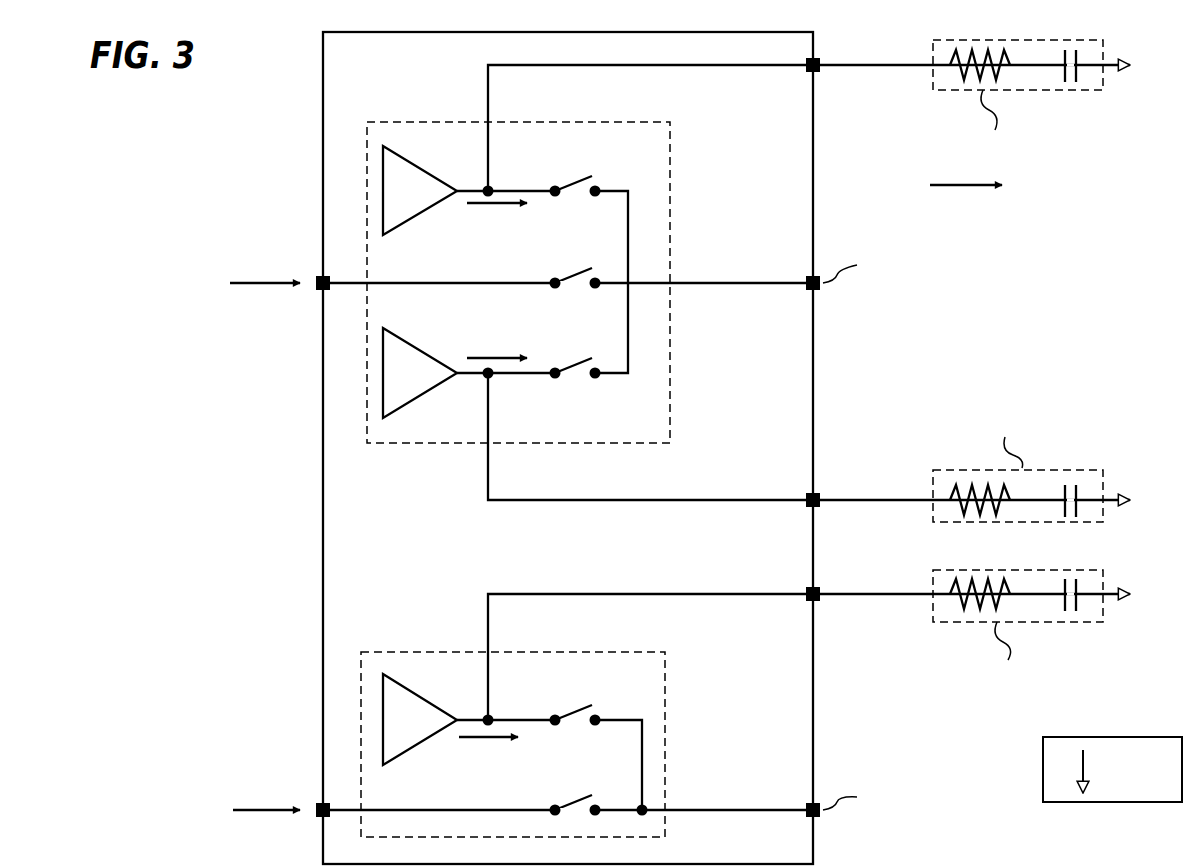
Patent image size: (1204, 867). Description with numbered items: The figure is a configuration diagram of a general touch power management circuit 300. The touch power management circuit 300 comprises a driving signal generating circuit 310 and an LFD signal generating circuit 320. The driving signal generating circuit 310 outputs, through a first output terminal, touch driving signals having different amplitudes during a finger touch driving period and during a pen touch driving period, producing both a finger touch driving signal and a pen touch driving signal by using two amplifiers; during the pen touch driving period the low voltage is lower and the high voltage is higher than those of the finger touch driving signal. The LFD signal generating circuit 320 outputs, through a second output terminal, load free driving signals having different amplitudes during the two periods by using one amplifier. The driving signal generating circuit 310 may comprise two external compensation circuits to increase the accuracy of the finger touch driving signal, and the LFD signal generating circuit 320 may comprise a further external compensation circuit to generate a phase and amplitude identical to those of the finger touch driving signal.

The touch power management circuit 300 is at (323, 548).
The driving signal generating circuit 310 is at (400, 443).
The LFD signal generating circuit 320 is at (435, 652).